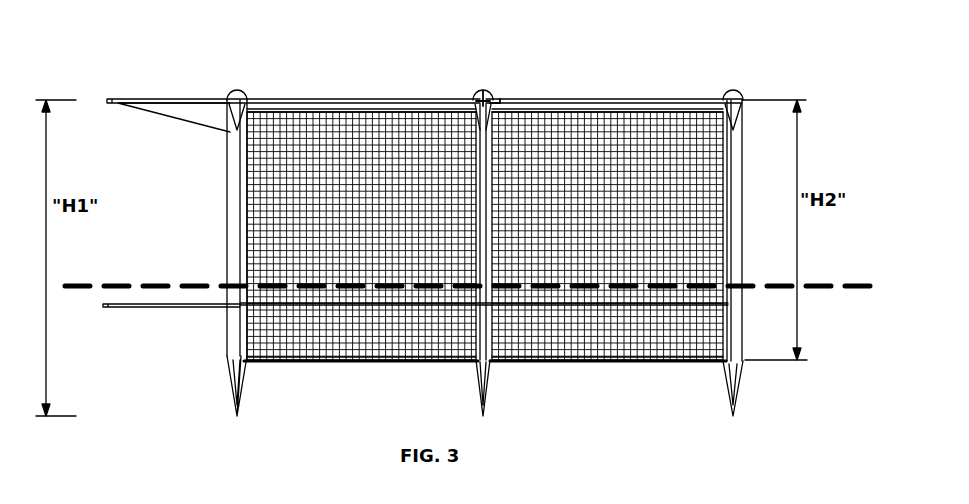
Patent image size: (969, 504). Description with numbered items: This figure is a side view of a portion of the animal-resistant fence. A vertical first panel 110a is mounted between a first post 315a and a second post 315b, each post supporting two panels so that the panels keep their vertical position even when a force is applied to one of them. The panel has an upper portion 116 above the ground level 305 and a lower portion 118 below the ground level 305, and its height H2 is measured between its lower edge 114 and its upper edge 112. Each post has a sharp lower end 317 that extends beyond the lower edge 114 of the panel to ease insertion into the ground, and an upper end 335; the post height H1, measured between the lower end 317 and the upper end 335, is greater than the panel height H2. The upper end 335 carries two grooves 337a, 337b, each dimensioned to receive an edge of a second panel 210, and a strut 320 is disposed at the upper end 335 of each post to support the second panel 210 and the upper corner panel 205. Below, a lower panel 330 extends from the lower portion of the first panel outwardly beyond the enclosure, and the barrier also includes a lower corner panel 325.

The first panel 110a is at (335, 153).
The upper edge 112 is at (680, 104).
The lower edge 114 is at (661, 363).
The upper portion 116 is at (313, 180).
The lower portion 118 is at (433, 349).
The upper corner panel 205 is at (160, 98).
The second panel 210 is at (580, 99).
The ground level 305 is at (807, 285).
The first post 315a is at (227, 198).
The second post 315b is at (490, 275).
The lower end 317 is at (233, 398).
The strut 320 is at (197, 116).
The lower corner panel 325 is at (165, 309).
The lower panel 330 is at (403, 305).
The upper end 335 is at (488, 96).
The groove 337a is at (477, 97).
The groove 337b is at (501, 103).